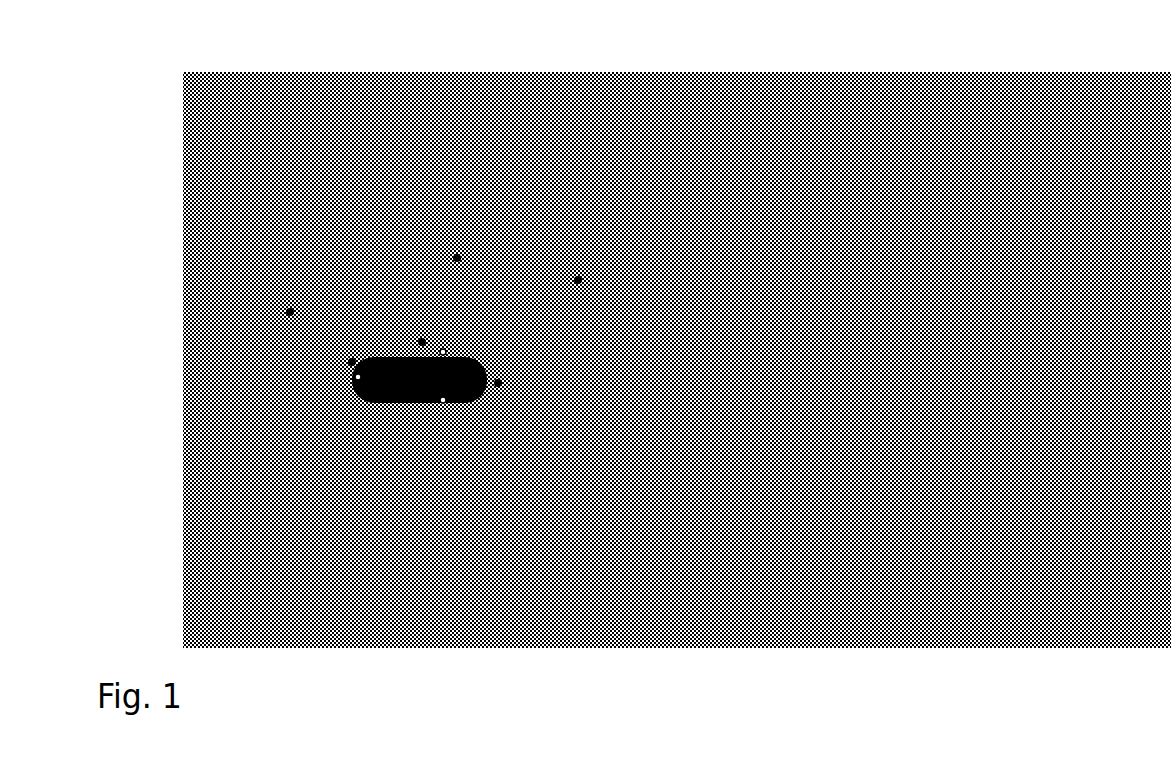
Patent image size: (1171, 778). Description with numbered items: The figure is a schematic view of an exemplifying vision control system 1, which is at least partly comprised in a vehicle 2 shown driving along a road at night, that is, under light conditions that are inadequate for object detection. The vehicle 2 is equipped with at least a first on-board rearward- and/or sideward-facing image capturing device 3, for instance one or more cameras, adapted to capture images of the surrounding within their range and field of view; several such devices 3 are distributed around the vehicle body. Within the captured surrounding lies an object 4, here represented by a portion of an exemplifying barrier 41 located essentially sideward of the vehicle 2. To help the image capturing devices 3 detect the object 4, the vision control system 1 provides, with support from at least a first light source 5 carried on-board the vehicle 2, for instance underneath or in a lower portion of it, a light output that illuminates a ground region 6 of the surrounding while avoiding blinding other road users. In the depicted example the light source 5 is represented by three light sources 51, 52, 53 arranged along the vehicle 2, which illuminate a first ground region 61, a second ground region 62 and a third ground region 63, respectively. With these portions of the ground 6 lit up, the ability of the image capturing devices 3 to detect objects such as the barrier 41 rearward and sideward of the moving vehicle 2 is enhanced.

The vision control system 1 is at (957, 33).
The vehicle 2 is at (355, 415).
The image capturing device 3 is at (436, 346).
The object 4 is at (526, 173).
The barrier 41 is at (540, 290).
The light source 5 is at (424, 366).
The first light source 51 is at (498, 383).
The second light source 52 is at (422, 342).
The third light source 53 is at (290, 312).
The ground region 6 is at (332, 200).
The first ground region 61 is at (578, 280).
The second ground region 62 is at (457, 258).
The third ground region 63 is at (352, 362).